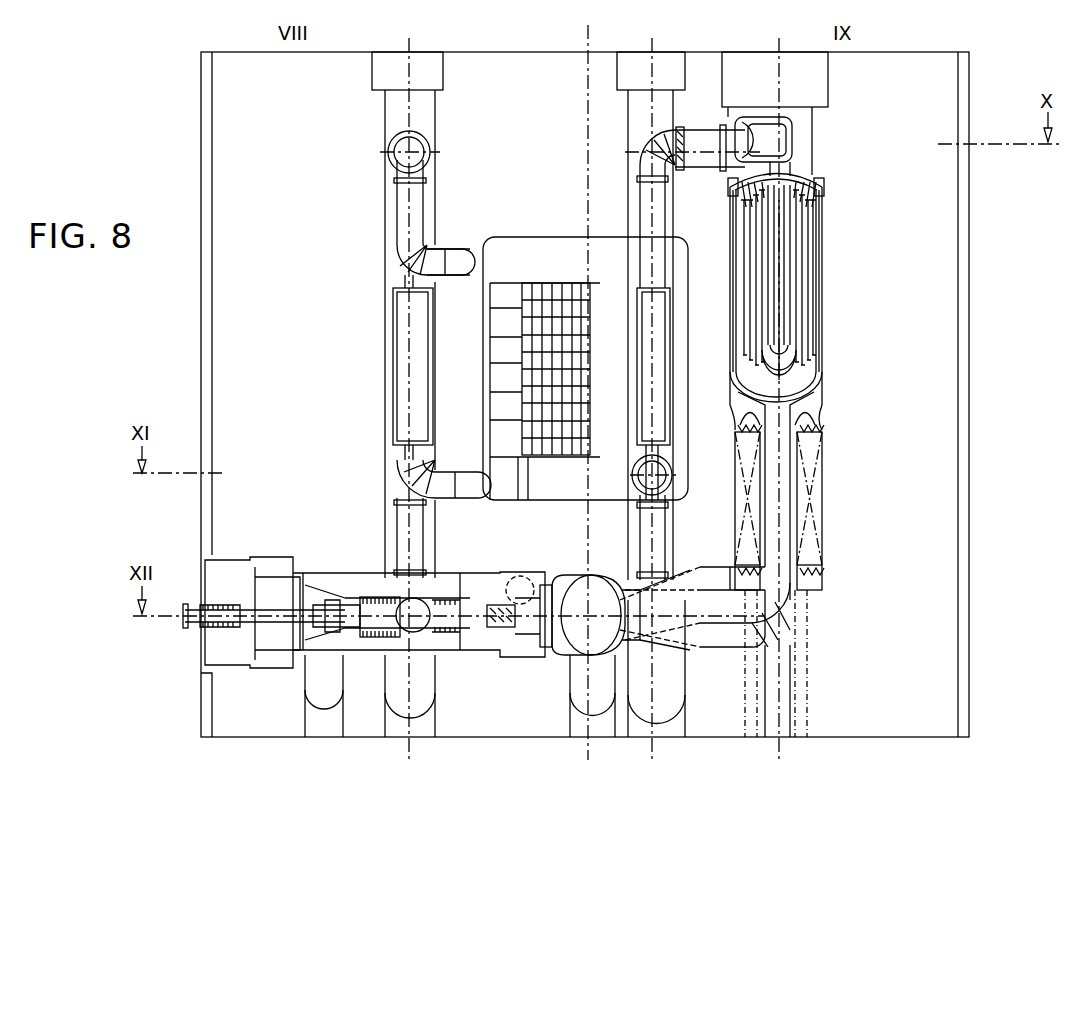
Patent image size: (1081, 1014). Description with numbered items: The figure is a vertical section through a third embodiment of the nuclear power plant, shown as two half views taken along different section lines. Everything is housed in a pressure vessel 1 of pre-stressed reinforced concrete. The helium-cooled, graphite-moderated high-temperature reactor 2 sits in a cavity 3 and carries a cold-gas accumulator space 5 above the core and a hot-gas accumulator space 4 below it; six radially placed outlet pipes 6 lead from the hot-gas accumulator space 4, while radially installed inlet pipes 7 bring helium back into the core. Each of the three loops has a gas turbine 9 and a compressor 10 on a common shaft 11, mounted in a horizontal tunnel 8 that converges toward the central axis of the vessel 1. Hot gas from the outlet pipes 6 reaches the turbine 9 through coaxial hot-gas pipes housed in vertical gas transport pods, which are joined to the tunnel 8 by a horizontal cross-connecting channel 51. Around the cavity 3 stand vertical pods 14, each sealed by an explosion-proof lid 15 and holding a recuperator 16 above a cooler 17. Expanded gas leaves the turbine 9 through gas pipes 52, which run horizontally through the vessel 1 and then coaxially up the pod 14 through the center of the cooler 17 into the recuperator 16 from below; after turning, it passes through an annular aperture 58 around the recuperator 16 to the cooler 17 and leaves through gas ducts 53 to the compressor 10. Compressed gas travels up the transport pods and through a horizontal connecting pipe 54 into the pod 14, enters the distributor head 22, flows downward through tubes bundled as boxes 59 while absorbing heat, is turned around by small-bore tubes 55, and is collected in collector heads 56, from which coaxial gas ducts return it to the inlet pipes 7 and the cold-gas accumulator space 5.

The pre-stressed concrete pressure vessel 1 is at (532, 108).
The nuclear reactor 2 is at (540, 282).
The reactor cavity 3 is at (683, 330).
The hot-gas accumulator space 4 is at (572, 498).
The cold-gas accumulator space 5 is at (570, 275).
The outlet pipe 6 is at (470, 486).
The inlet pipe 7 is at (443, 262).
The horizontal turbine shaft (tunnel) 8 is at (470, 645).
The gas turbine 9 is at (440, 650).
The compressor 10 is at (497, 616).
The common shaft 11 is at (280, 615).
The vertical pod 14 is at (812, 400).
The explosion-proof lid 15 is at (812, 80).
The recuperator 16 is at (784, 266).
The cooler 17 is at (805, 476).
The distributor head 22 is at (800, 174).
The horizontal cross-connecting channel 51 is at (628, 640).
The gas pipe 52 is at (735, 640).
The gas duct 53 is at (712, 584).
The horizontal connecting pipe 54 is at (712, 168).
The small-bore tube 55 is at (782, 374).
The collector head 56 is at (758, 145).
The annular aperture 58 is at (820, 288).
The tube box 59 is at (805, 322).